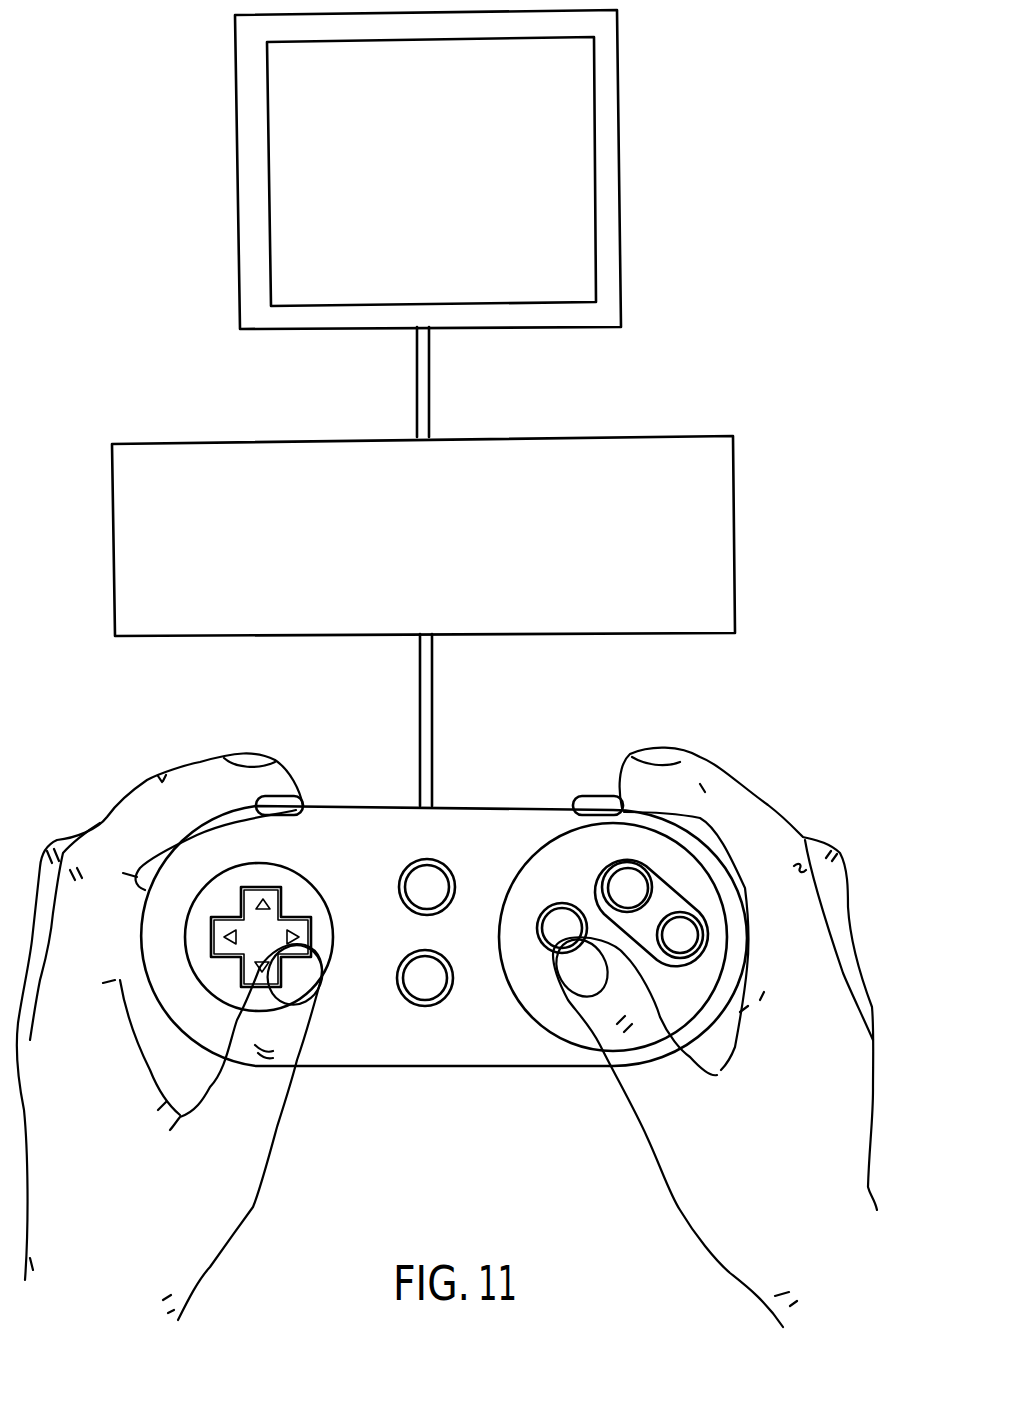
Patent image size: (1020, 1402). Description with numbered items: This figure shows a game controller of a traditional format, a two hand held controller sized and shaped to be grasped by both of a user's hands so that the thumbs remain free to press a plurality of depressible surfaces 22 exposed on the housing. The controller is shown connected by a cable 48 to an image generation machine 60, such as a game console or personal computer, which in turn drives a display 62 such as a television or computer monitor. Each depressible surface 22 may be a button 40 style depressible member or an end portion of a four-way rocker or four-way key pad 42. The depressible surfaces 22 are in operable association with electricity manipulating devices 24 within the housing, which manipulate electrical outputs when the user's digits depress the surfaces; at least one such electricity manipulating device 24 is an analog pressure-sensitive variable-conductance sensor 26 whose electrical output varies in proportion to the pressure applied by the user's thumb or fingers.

The display 62 is at (621, 167).
The image generation machine 60 is at (671, 433).
The cable 48 is at (432, 669).
The electricity manipulating device 24 is at (417, 857).
The analog pressure-sensitive variable-conductance sensor 26 is at (236, 884).
The four-way key pad 42 is at (262, 905).
The button 40 is at (690, 932).
The depressible surface 22 is at (291, 795).